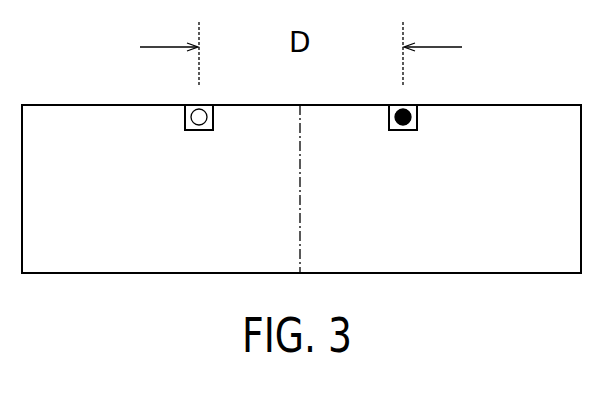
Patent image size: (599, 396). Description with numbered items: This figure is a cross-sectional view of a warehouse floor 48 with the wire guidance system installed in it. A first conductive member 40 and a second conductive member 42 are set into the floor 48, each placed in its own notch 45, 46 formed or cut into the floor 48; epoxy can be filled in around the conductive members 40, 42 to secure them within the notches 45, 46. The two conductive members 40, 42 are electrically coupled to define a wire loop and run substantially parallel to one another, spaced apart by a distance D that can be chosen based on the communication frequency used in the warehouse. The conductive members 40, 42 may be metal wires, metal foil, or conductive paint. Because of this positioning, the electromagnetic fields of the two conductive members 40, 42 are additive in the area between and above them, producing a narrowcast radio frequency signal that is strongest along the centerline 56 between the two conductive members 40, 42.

The first conductive member 40 is at (185, 117).
The notch 45 is at (213, 117).
The second conductive member 42 is at (417, 117).
The notch 46 is at (389, 117).
The warehouse floor 48 is at (440, 105).
The centerline 56 is at (300, 187).